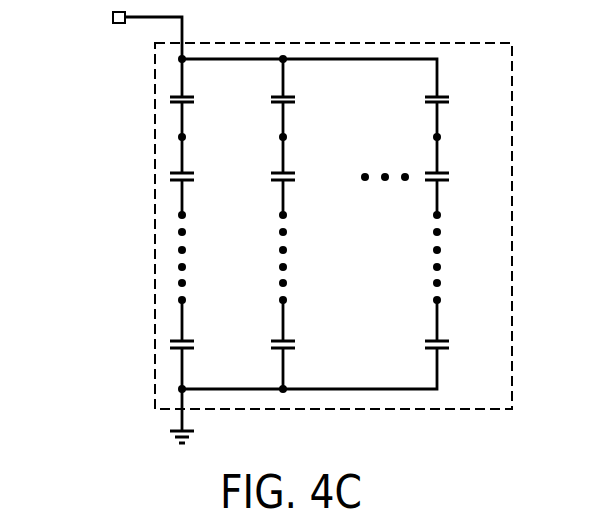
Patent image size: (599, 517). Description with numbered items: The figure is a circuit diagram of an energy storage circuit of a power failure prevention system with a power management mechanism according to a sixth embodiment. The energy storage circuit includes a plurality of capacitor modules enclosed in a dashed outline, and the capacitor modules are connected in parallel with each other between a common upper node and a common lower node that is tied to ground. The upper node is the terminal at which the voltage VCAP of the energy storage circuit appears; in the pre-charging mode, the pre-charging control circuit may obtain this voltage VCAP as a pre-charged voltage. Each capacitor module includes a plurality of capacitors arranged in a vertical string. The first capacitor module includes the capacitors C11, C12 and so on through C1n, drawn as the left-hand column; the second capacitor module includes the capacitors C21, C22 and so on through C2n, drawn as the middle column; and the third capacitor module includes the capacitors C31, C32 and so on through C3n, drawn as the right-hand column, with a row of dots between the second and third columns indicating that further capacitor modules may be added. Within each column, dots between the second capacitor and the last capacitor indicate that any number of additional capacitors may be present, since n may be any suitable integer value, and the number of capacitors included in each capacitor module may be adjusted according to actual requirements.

The voltage of the energy storage circuit VCAP is at (79, 21).
The capacitor C11 is at (206, 97).
The capacitor C12 is at (207, 176).
The capacitor C1n is at (207, 344).
The capacitor C21 is at (308, 97).
The capacitor C22 is at (308, 176).
The capacitor C2n is at (308, 344).
The capacitor C31 is at (461, 97).
The capacitor C32 is at (461, 176).
The capacitor C3n is at (462, 344).